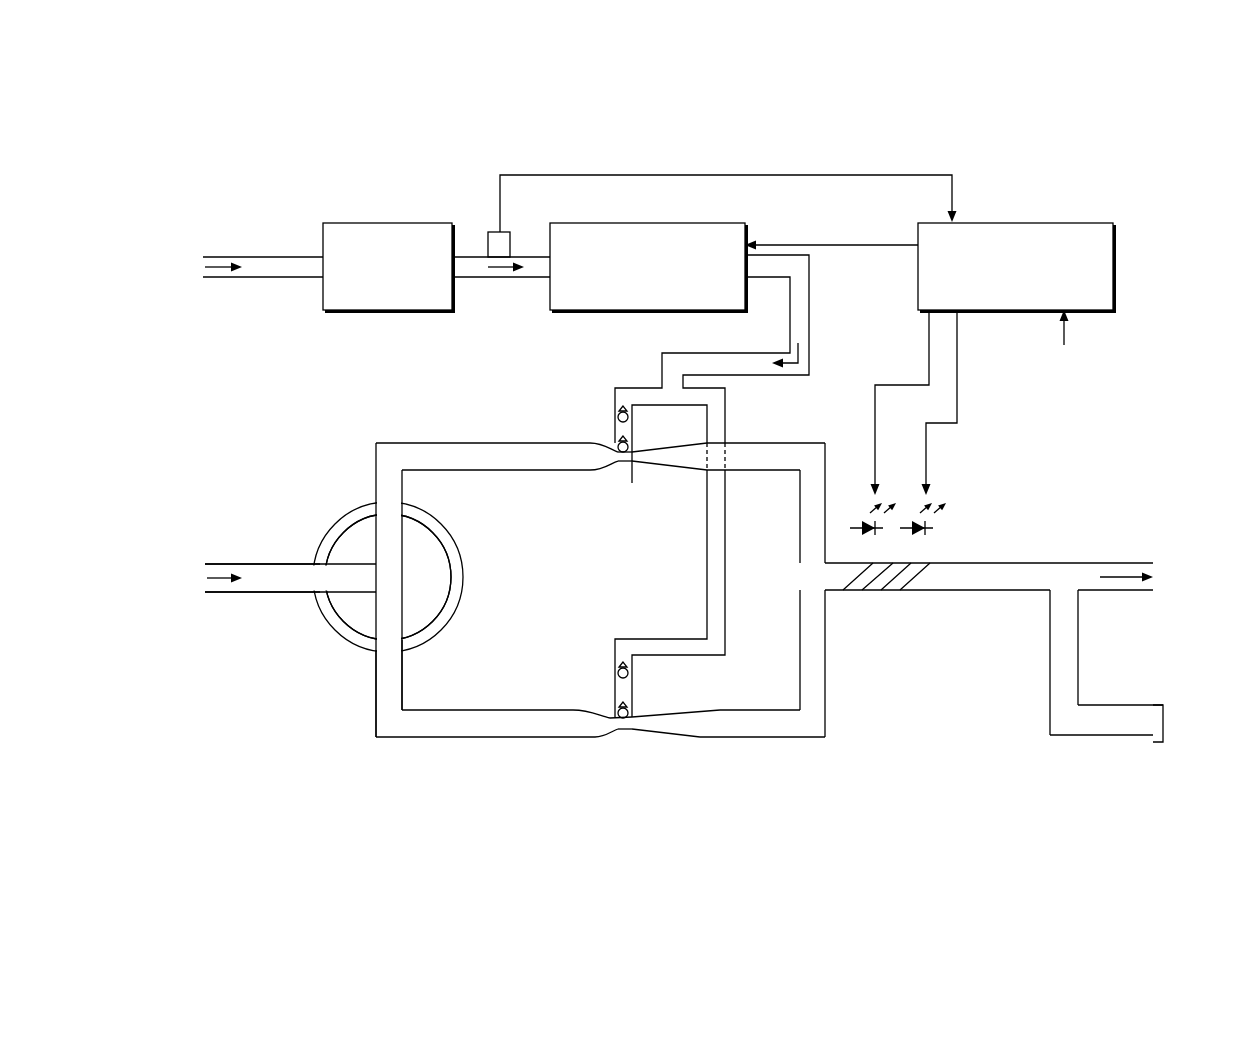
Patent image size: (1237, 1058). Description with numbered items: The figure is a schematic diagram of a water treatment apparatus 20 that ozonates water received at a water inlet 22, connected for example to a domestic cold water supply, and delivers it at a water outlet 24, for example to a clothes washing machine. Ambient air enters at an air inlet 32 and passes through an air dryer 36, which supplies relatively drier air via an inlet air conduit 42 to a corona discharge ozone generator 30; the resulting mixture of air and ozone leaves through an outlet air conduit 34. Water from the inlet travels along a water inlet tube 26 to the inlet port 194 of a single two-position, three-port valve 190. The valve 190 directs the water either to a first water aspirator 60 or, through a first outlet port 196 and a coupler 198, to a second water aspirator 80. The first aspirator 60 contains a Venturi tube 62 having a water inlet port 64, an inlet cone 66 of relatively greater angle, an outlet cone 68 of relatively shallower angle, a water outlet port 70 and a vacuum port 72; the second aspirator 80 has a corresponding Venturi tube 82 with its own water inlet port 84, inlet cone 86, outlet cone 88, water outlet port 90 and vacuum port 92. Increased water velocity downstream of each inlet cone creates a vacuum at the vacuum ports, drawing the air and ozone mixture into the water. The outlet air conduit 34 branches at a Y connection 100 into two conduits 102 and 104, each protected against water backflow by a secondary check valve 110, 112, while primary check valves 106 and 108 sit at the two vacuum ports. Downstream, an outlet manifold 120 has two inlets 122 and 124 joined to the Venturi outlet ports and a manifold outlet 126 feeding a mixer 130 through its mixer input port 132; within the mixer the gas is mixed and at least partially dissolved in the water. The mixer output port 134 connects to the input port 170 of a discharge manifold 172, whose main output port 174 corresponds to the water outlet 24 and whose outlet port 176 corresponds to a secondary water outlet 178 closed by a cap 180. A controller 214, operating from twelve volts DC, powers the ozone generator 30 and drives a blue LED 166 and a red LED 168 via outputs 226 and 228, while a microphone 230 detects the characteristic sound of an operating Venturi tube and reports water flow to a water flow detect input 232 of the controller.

The water treatment apparatus 20 is at (1165, 142).
The water inlet 22 is at (208, 593).
The water outlet 24 is at (1151, 585).
The water inlet tube 26 is at (272, 594).
The ozone generator 30 is at (706, 230).
The air inlet 32 is at (204, 273).
The outlet air conduit 34 is at (808, 288).
The air dryer 36 is at (418, 223).
The inlet air conduit 42 is at (525, 279).
The water aspirator 60 is at (490, 832).
The Venturi tube 62 is at (673, 757).
The water inlet port 64 is at (484, 710).
The inlet cone 66 is at (609, 716).
The outlet cone 68 is at (648, 718).
The water outlet port 70 is at (745, 711).
The vacuum port 72 is at (608, 714).
The second water aspirator 80 is at (555, 550).
The Venturi tube 82 is at (668, 520).
The water inlet port 84 is at (484, 452).
The inlet cone 86 is at (617, 449).
The outlet cone 88 is at (633, 452).
The water outlet port 90 is at (782, 443).
The vacuum port 92 is at (617, 443).
The "Y" connection 100 is at (665, 384).
The conduit 102 is at (723, 570).
The conduit 104 is at (618, 384).
The primary check valve 106 is at (634, 706).
The primary check valve 108 is at (616, 452).
The secondary check valve 110 is at (614, 667).
The secondary check valve 112 is at (634, 386).
The outlet manifold 120 is at (836, 645).
The inlet 122 is at (773, 738).
The inlet 124 is at (797, 471).
The manifold outlet 126 is at (840, 588).
The mixer 130 is at (905, 573).
The mixer input port 132 is at (846, 570).
The mixer output port 134 is at (943, 563).
The blue LED 166 is at (902, 473).
The red LED 168 is at (953, 482).
The input port 170 is at (1023, 577).
The discharge manifold 172 is at (1063, 645).
The output port 174 is at (1100, 588).
The outlet port 176 is at (1100, 727).
The secondary water outlet 178 is at (1154, 715).
The cap 180 is at (1164, 731).
The two-position valve 190 is at (335, 512).
The inlet port 194 is at (280, 562).
The first outlet port 196 is at (366, 673).
The coupler 198 is at (375, 478).
The controller 214 is at (1073, 226).
The output 226 is at (920, 342).
The output 228 is at (960, 345).
The microphone 230 is at (492, 246).
The water flow detect input 232 is at (954, 213).